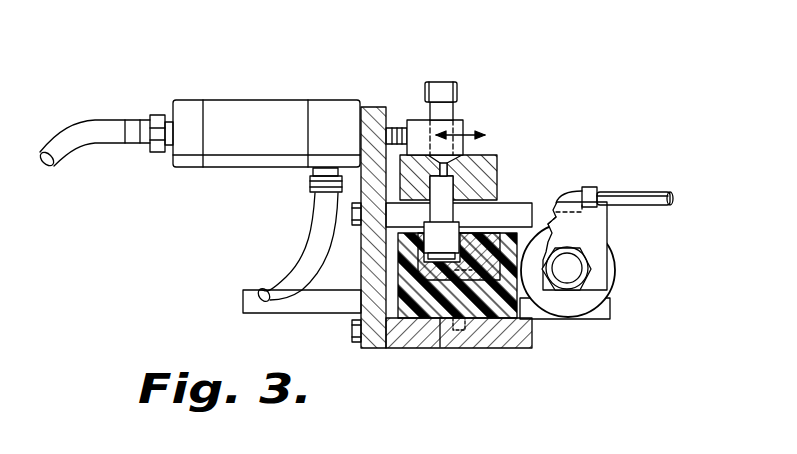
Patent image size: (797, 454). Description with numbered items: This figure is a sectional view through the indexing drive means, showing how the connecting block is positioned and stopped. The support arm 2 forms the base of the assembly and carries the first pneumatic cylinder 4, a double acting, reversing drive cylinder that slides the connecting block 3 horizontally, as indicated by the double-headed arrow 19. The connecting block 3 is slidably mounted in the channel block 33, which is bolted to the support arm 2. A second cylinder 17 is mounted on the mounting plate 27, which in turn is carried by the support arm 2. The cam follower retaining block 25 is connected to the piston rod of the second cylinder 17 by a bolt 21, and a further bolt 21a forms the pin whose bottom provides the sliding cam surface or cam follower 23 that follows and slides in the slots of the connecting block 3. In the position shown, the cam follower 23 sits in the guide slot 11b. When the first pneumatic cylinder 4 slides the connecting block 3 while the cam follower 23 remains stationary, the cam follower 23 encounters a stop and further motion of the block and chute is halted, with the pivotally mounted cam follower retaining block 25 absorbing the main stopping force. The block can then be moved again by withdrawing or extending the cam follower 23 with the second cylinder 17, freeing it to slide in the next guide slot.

The support arm 2 is at (430, 348).
The connecting block 3 is at (498, 300).
The first pneumatic cylinder 4 is at (613, 260).
The guide slot 11b is at (418, 262).
The second cylinder 17 is at (258, 100).
The double-headed arrow 19 is at (500, 98).
The bolt 21 is at (441, 82).
The bolt 21a is at (485, 153).
The cam follower 23 is at (459, 225).
The cam follower retaining block 25 is at (452, 170).
The mounting plate 27 is at (361, 277).
The channel block 33 is at (440, 347).